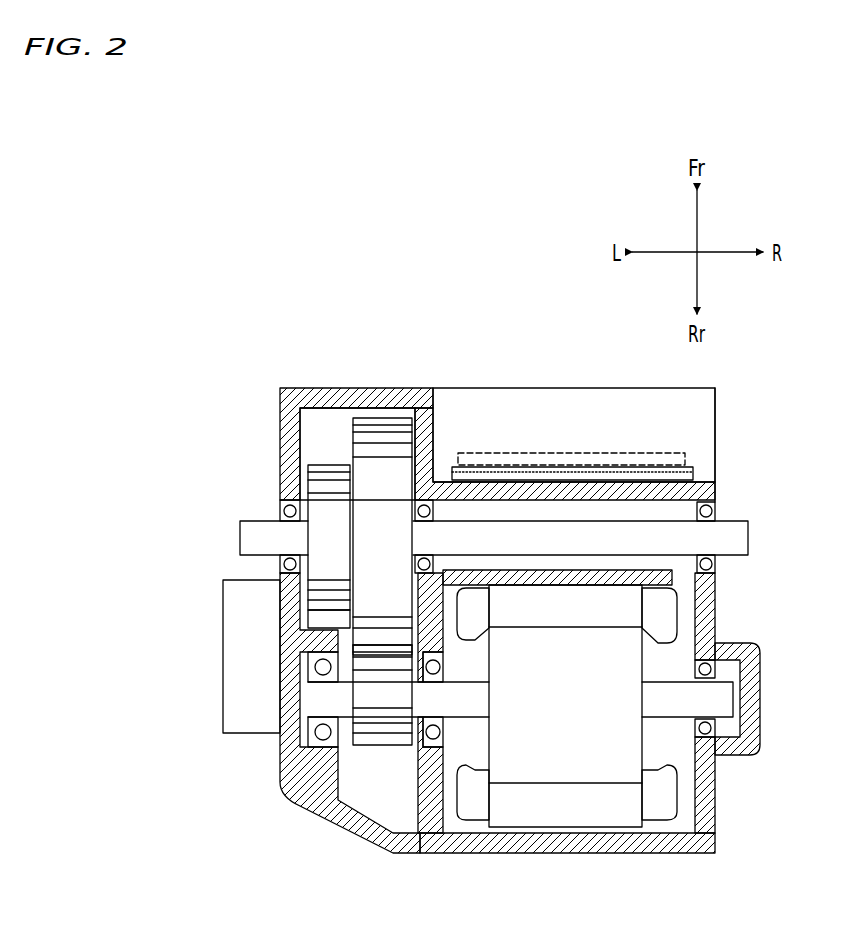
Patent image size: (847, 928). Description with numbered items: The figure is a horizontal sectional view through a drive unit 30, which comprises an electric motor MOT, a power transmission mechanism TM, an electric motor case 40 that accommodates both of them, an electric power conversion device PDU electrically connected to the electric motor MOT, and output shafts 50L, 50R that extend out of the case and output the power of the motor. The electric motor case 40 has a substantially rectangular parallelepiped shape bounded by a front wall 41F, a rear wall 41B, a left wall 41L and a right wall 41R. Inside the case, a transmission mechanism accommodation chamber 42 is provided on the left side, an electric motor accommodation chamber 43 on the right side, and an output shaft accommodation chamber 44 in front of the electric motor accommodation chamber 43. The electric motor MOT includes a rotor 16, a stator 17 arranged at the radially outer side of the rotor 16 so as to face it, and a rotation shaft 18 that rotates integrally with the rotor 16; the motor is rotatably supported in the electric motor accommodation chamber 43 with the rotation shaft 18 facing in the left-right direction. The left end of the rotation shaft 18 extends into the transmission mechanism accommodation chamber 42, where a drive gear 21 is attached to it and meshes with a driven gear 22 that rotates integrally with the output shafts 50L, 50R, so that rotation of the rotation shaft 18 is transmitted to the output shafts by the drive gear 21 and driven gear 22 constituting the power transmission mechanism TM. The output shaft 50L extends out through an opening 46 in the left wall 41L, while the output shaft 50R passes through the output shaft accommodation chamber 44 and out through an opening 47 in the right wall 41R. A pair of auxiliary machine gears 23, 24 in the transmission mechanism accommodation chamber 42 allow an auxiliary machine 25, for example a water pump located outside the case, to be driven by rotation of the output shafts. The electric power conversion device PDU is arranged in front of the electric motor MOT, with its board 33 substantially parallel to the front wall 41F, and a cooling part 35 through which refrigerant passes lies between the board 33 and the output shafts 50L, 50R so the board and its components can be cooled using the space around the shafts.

The rotor 16 is at (512, 750).
The stator 17 is at (572, 808).
The rotation shaft 18 is at (446, 704).
The drive gear 21 is at (383, 727).
The driven gear 22 is at (388, 460).
The auxiliary machine gear 23 is at (327, 477).
The auxiliary machine gear 24 is at (320, 622).
The auxiliary machine 25 is at (248, 727).
The drive unit 30 is at (498, 382).
The board 33 is at (643, 453).
The cooling part 35 is at (697, 472).
The electric motor case 40 is at (327, 828).
The left wall 41L is at (280, 425).
The right wall 41R is at (717, 797).
The front wall 41F is at (655, 482).
The rear wall 41B is at (640, 853).
The transmission mechanism accommodation chamber 42 is at (320, 423).
The electric motor accommodation chamber 43 is at (745, 742).
The output shaft accommodation chamber 44 is at (650, 510).
The opening 46 is at (287, 563).
The opening 47 is at (708, 568).
The output shaft 50L is at (258, 520).
The output shaft 50R is at (725, 521).
The power transmission mechanism TM is at (342, 428).
The electric power conversion device PDU is at (547, 410).
The electric motor MOT is at (645, 628).